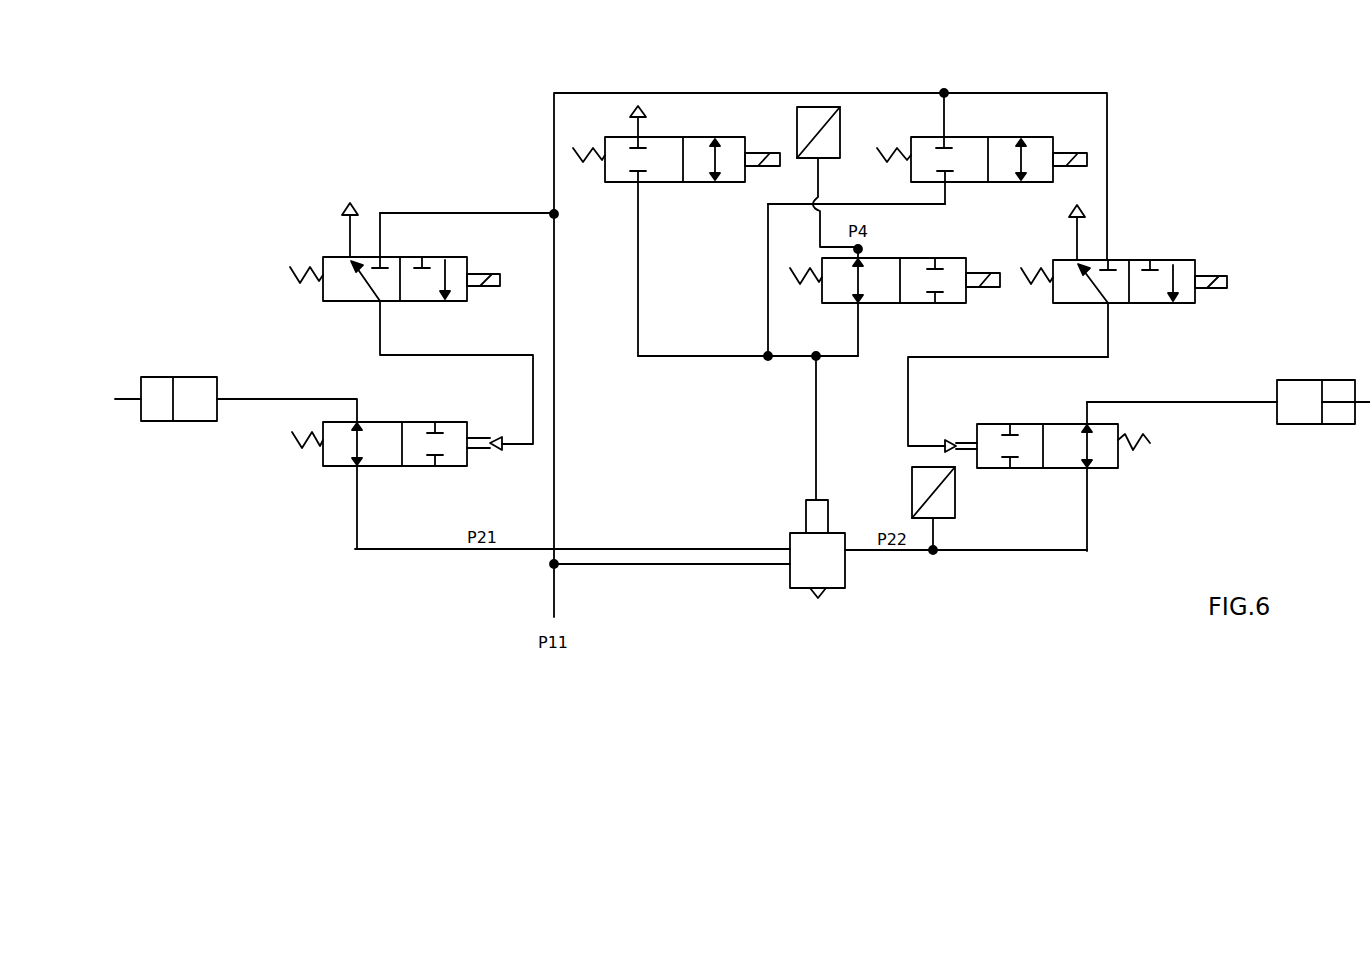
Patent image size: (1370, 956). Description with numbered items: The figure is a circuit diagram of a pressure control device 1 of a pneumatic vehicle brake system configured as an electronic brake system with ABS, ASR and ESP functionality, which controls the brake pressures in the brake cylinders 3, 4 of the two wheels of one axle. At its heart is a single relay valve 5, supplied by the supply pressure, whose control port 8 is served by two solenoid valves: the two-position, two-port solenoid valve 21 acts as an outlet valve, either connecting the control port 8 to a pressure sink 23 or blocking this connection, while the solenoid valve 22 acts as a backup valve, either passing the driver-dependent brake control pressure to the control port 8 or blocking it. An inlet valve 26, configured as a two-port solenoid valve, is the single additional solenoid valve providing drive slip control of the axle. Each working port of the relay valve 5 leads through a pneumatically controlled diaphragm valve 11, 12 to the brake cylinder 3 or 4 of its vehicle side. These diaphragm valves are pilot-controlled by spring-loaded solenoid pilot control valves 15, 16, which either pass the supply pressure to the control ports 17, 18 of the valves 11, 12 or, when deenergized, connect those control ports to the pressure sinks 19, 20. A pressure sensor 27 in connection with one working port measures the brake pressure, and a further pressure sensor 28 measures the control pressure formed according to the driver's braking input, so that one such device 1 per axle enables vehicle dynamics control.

The pressure control device 1 is at (1174, 75).
The brake cylinder 3 is at (1297, 387).
The brake cylinder 4 is at (203, 382).
The relay valve 5 is at (840, 578).
The control port 8 is at (817, 498).
The 2/2-way valve 11 is at (1061, 428).
The 2/2-way valve 12 is at (422, 459).
The 3/2-way solenoid pilot control valve 15 is at (1162, 258).
The 3/2-way solenoid pilot control valve 16 is at (354, 294).
The control port 17 is at (946, 439).
The control port 18 is at (500, 435).
The pressure sink 19 is at (1067, 208).
The pressure sink 20 is at (341, 207).
The 2/2-way solenoid valve 21 is at (700, 178).
The 2/2-way solenoid valve 22 is at (830, 296).
The pressure sink 23 is at (629, 111).
The inlet valve 26 is at (969, 146).
The pressure sensor 27 is at (957, 490).
The pressure sensor 28 is at (836, 127).